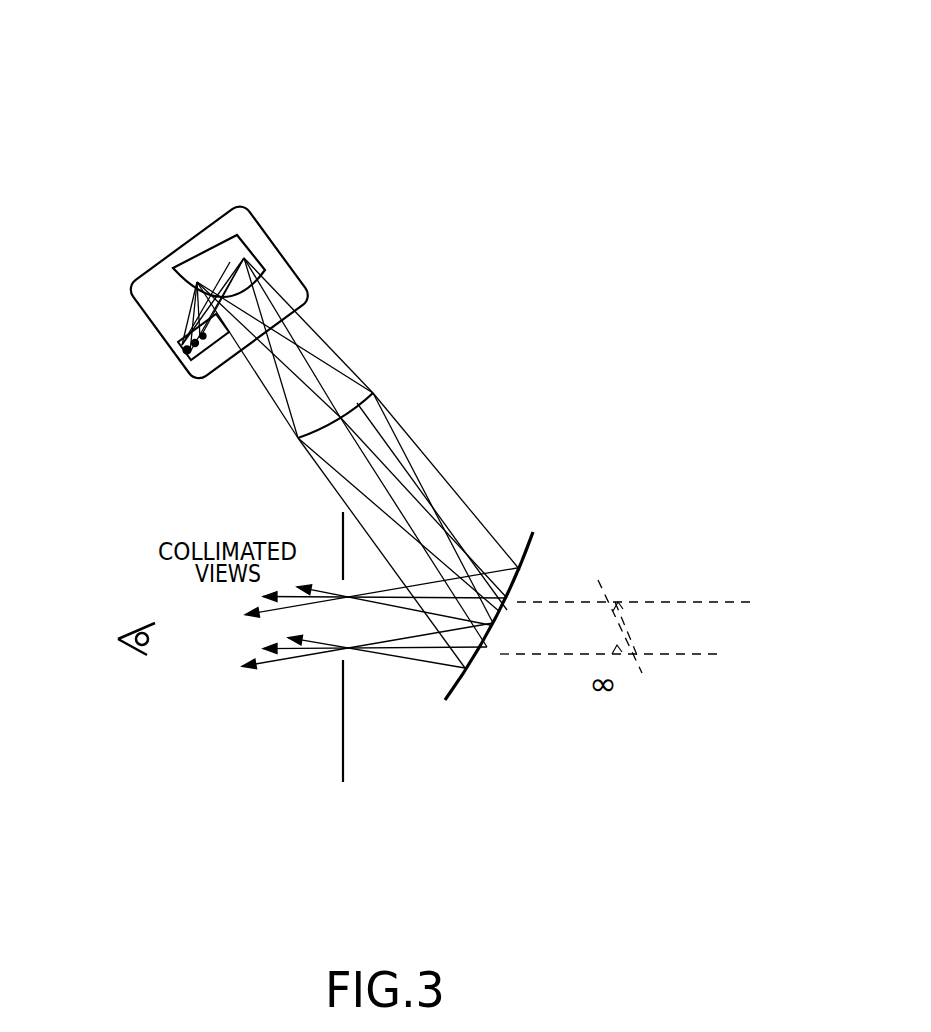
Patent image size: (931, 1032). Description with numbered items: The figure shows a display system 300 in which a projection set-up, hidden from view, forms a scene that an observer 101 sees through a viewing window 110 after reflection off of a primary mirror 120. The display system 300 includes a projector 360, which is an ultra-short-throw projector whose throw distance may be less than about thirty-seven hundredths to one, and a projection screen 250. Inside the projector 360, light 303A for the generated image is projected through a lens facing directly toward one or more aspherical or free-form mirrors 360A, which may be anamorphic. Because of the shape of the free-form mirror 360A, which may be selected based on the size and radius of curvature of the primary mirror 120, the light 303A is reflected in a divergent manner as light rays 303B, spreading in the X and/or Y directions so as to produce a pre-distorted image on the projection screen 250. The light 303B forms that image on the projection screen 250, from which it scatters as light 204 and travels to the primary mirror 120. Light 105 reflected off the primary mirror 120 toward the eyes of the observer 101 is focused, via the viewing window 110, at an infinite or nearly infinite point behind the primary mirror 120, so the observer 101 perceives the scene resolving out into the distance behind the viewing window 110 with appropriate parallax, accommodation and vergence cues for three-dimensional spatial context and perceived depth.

The display system 300 is at (118, 94).
The projector 360 is at (248, 218).
The aspherical or free-form mirror 360A is at (228, 257).
The light 303A is at (172, 322).
The reflected light rays 303B is at (326, 394).
The projection screen 250 is at (373, 392).
The light 204 is at (447, 539).
The primary mirror 120 is at (462, 680).
The light 105 is at (417, 637).
The viewing window 110 is at (343, 778).
The observer 101 is at (160, 731).